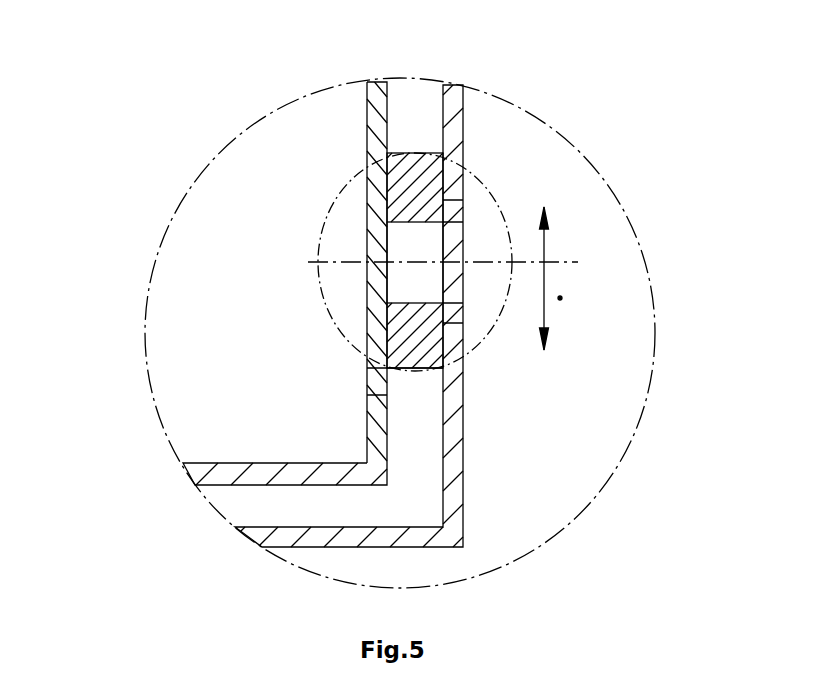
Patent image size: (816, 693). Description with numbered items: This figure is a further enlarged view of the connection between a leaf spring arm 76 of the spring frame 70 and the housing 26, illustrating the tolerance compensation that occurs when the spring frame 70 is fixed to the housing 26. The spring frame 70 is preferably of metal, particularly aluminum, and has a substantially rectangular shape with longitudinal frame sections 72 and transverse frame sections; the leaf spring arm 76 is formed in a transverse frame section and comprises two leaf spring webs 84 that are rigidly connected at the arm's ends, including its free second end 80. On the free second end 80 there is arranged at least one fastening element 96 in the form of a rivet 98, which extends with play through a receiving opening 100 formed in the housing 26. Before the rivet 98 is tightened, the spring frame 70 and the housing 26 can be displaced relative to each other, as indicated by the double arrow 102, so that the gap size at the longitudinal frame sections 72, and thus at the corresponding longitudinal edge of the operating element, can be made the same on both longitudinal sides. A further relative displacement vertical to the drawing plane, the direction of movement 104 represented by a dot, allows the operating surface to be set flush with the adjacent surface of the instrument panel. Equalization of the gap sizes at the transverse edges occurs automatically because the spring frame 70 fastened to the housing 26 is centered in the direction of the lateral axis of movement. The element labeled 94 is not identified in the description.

The housing 26 is at (457, 124).
The spring frame 70 is at (219, 247).
The longitudinal frame sections 72 is at (240, 473).
The leaf spring arm 76 is at (347, 128).
The free second end 80 is at (317, 397).
The leaf spring webs 84 is at (379, 82).
The upper guide block / bearing 94 is at (408, 155).
The fastening element 96 is at (512, 167).
The rivet 98 is at (425, 243).
The receiving opening 100 is at (452, 313).
The double arrow 102 is at (546, 252).
The direction of movement 104 is at (560, 298).